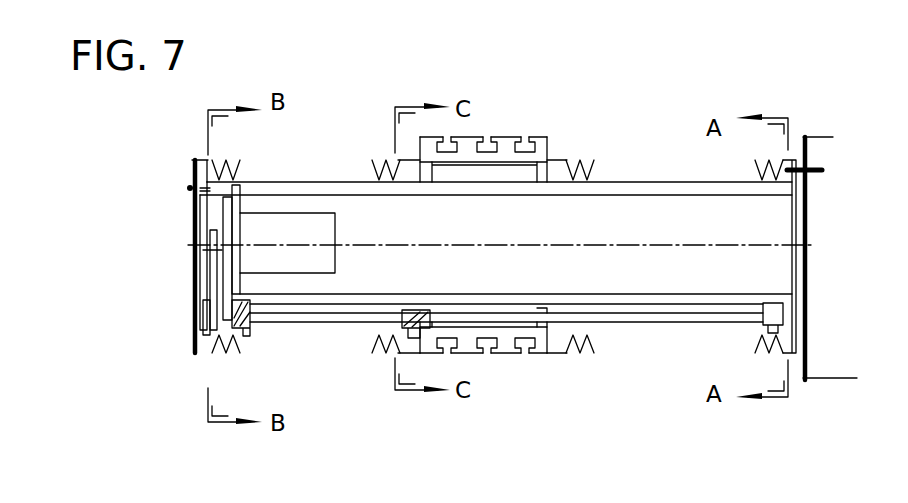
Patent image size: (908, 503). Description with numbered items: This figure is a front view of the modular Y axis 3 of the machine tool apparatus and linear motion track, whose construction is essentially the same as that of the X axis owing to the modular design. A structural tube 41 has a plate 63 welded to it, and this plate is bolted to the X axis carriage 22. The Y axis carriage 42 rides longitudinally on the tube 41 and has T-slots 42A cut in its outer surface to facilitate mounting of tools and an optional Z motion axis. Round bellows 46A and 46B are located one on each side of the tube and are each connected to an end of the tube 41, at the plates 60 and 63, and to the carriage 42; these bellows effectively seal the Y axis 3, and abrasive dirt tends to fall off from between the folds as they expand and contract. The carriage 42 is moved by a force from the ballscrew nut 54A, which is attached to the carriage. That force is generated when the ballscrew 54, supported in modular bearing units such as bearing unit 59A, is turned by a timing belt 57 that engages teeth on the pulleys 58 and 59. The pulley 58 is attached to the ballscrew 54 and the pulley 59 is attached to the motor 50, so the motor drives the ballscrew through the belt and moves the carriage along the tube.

The Y axis 3 is at (509, 103).
The X axis carriage 22 is at (833, 137).
The structural tube 41 is at (627, 185).
The Y axis carriage 42 is at (543, 137).
The T-slots 42A is at (523, 137).
The bellows 46A is at (214, 352).
The bellows 46B is at (783, 312).
The motor 50 is at (275, 222).
The ballscrew 54 is at (348, 320).
The ballscrew nut 54A is at (420, 313).
The timing belt 57 is at (193, 282).
The pulley 58 is at (193, 325).
The pulley 59 is at (210, 251).
The modular bearing unit 59A is at (243, 327).
The plate 60 is at (193, 168).
The plate 63 is at (796, 209).